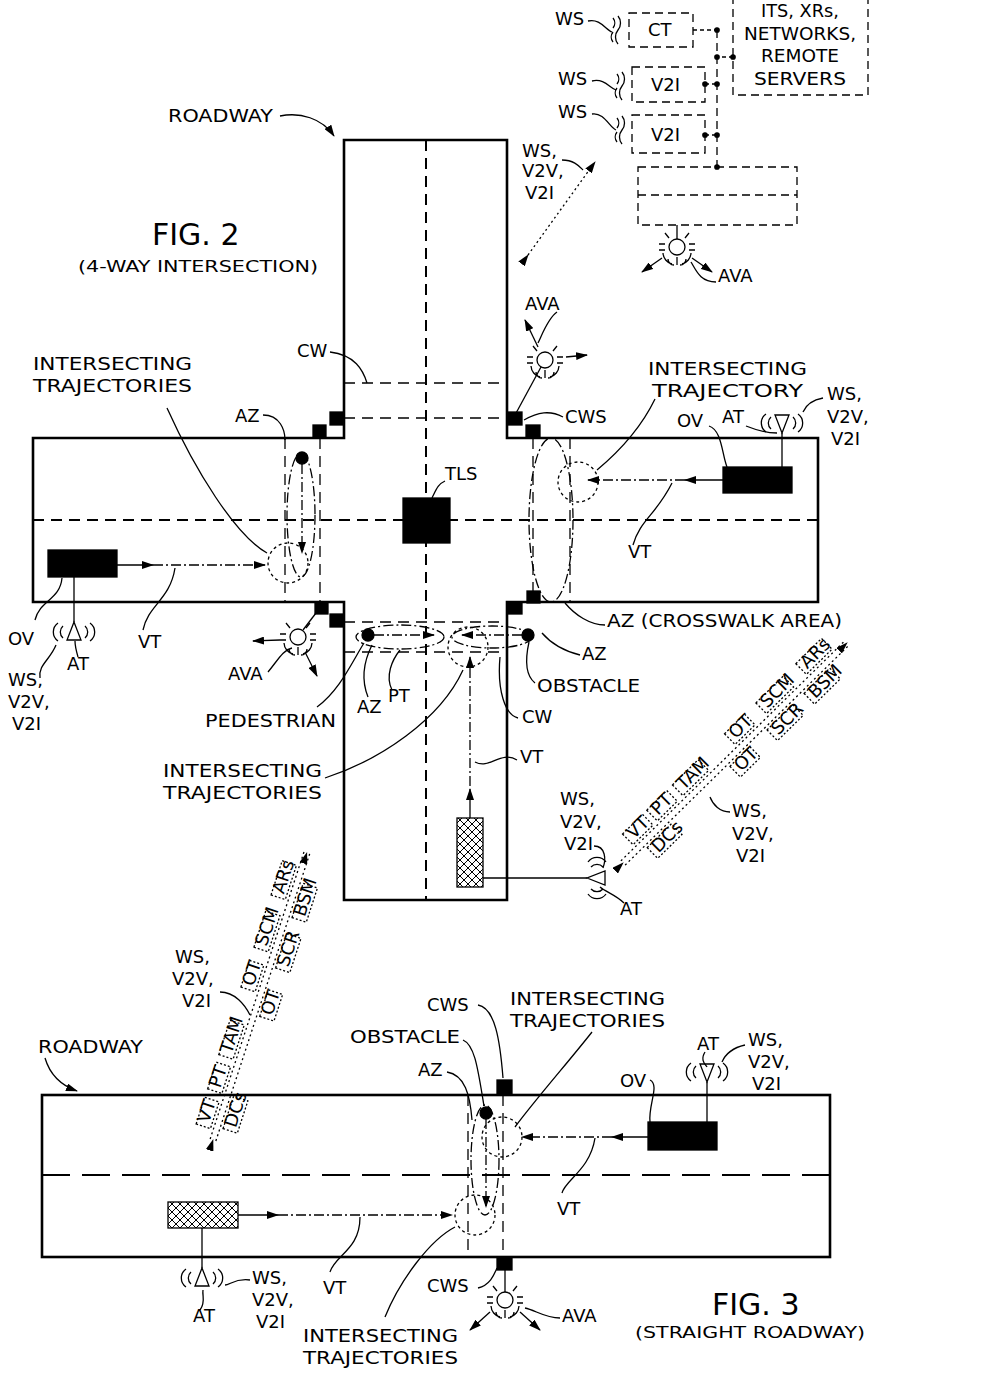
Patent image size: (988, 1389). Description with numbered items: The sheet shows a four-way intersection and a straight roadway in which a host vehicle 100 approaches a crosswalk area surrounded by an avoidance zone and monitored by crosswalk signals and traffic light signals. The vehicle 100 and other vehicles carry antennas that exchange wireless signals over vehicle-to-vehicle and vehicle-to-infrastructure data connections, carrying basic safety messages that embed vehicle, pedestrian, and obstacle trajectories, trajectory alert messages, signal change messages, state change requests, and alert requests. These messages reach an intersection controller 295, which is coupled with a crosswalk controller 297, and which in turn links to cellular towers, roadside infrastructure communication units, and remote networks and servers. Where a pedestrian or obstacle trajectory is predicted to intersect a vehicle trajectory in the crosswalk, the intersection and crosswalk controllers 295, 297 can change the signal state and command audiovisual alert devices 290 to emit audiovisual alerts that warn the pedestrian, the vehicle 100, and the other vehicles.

In FIG. 2, the vehicle 100 is at (483, 840).
In FIG. 3, the vehicle 100 is at (187, 1228).
In FIG. 2, the audiovisual alert device 290 is at (669, 244).
In FIG. 3, the audiovisual alert device 290 is at (510, 1283).
In FIG. 2, the intersection controller 295 is at (797, 184).
In FIG. 2, the crosswalk controller 297 is at (745, 226).